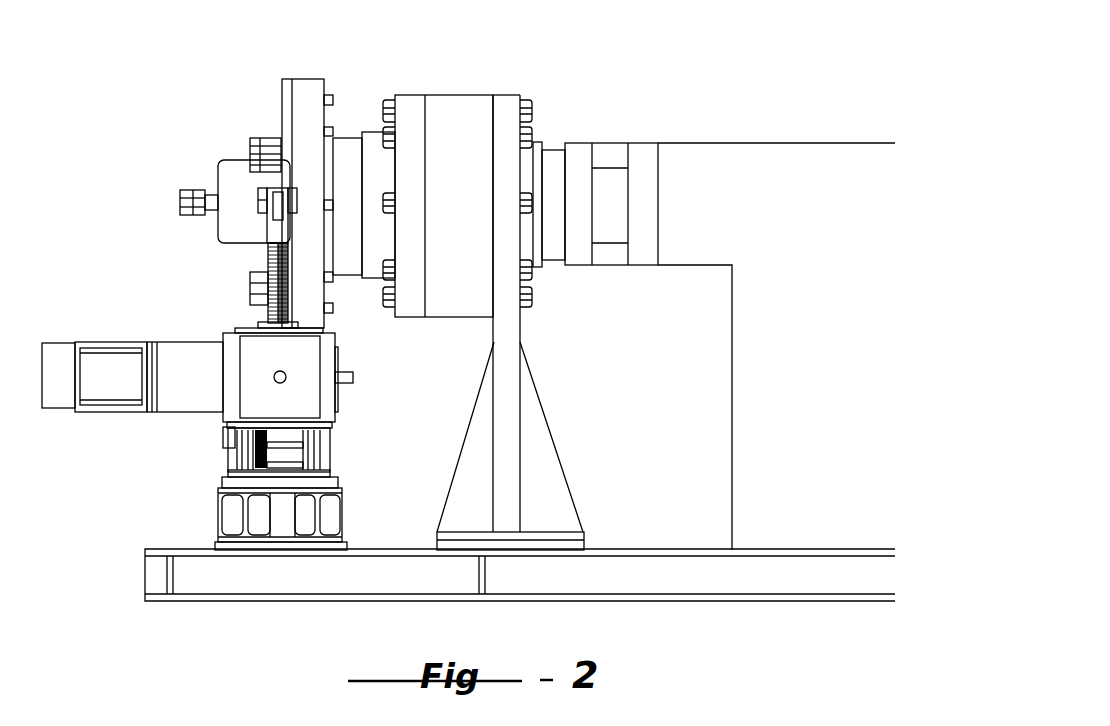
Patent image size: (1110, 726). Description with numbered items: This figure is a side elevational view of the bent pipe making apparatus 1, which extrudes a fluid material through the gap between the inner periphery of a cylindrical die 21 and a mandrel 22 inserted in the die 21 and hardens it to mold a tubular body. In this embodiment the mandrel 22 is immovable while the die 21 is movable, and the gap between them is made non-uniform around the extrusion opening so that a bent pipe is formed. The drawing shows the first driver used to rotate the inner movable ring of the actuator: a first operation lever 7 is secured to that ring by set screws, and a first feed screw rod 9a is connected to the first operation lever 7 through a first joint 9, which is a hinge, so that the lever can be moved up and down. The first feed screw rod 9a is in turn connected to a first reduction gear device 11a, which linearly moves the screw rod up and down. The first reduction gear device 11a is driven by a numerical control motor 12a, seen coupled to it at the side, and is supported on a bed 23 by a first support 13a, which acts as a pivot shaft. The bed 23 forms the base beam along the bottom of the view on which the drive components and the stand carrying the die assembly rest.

The bent pipe making apparatus 1 is at (327, 78).
The first operation lever 7 is at (278, 200).
The first joint 9 is at (260, 205).
The first feed screw rod 9a is at (268, 263).
The cylindrical die 21 is at (238, 162).
The mandrel 22 is at (218, 187).
The numerical control motor 12a is at (108, 346).
The first reduction gear device 11a is at (175, 398).
The first support 13a is at (256, 453).
The bed 23 is at (235, 553).